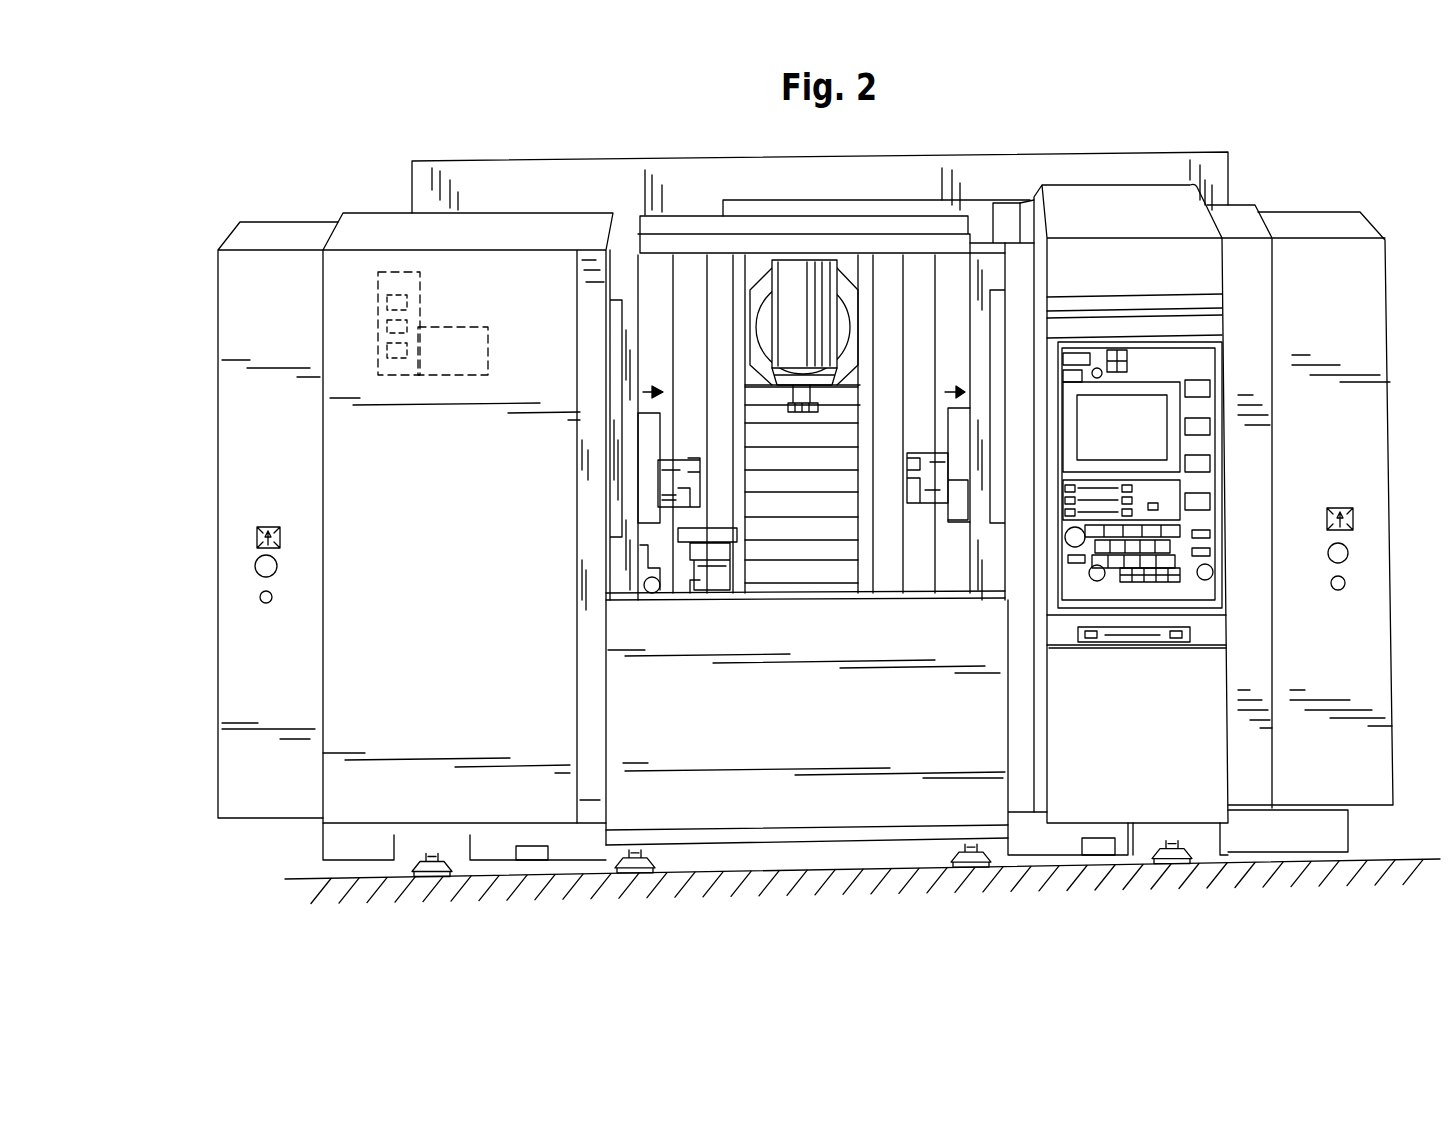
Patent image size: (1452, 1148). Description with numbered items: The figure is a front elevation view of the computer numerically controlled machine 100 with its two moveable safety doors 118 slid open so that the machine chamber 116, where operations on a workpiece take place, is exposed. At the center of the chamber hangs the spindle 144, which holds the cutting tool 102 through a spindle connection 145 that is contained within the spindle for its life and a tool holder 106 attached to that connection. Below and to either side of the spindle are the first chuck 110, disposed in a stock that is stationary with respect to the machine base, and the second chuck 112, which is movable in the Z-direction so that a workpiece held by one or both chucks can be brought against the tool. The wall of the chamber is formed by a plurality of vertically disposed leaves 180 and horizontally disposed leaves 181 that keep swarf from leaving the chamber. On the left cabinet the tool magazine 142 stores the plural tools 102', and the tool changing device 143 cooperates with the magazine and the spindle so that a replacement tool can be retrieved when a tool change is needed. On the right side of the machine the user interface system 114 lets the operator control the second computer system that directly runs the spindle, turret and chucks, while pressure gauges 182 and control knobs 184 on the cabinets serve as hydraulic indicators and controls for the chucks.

The computer numerically controlled machine 100 is at (1352, 172).
The cutting tool 102 is at (813, 523).
The tools 102' is at (282, 316).
The tool holder 106 is at (787, 400).
The first chuck 110 is at (683, 500).
The second chuck 112 is at (935, 505).
The user interface system 114 is at (1220, 435).
The machine chamber 116 is at (850, 462).
The safety doors 118 is at (988, 247).
The tool magazine 142 is at (395, 277).
The tool changing device 143 is at (437, 370).
The spindle 144 is at (790, 286).
The spindle connection 145 is at (800, 368).
The vertically disposed leaves 180 is at (653, 270).
The horizontal disposed leaves 181 is at (853, 500).
The pressure gauges 182 is at (257, 537).
The control knobs 184 is at (266, 570).